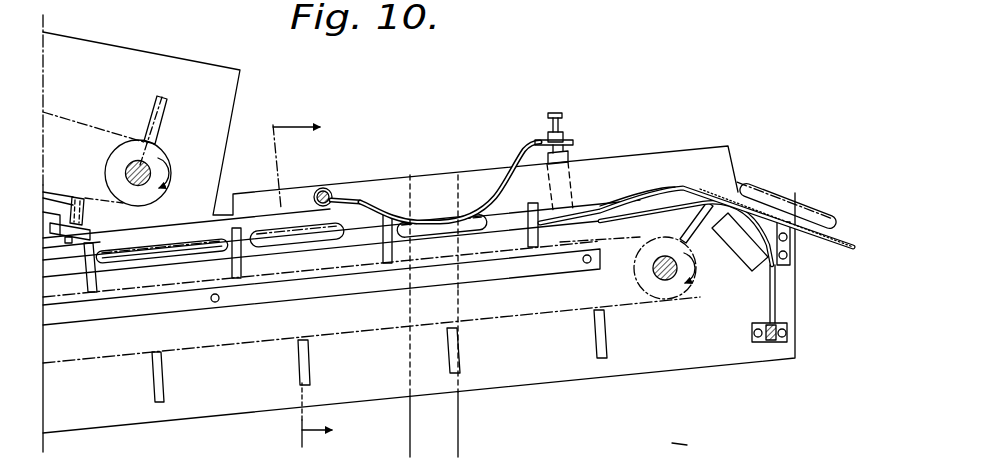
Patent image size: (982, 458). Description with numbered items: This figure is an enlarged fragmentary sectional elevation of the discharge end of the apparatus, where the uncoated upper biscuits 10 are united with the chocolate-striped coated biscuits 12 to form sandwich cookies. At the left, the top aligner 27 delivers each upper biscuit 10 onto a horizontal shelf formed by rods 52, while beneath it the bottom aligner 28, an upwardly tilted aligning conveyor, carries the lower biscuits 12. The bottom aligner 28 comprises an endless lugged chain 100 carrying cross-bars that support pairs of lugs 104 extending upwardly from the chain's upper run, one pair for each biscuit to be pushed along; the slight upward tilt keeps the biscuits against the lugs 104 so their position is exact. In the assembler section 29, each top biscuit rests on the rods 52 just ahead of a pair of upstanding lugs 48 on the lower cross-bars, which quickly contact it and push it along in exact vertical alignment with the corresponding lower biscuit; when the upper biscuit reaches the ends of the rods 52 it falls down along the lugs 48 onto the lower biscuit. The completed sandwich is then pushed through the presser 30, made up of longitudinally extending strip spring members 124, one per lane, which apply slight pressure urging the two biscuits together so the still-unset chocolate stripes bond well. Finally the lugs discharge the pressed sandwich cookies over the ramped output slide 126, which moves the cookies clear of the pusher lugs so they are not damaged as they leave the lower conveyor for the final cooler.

The uncoated biscuits 10 is at (282, 223).
The coated biscuits 12 is at (337, 307).
The top aligner 27 is at (160, 29).
The bottom aligner 28 is at (560, 379).
The assembler section 29 is at (358, 199).
The presser 30 is at (433, 175).
The upstanding lugs 48 is at (236, 230).
The rods 52 is at (207, 243).
The endless lugged chain 100 is at (505, 322).
The lugs 104 is at (97, 280).
The strip spring members 124 is at (490, 197).
The ramped output slide 126 is at (853, 247).